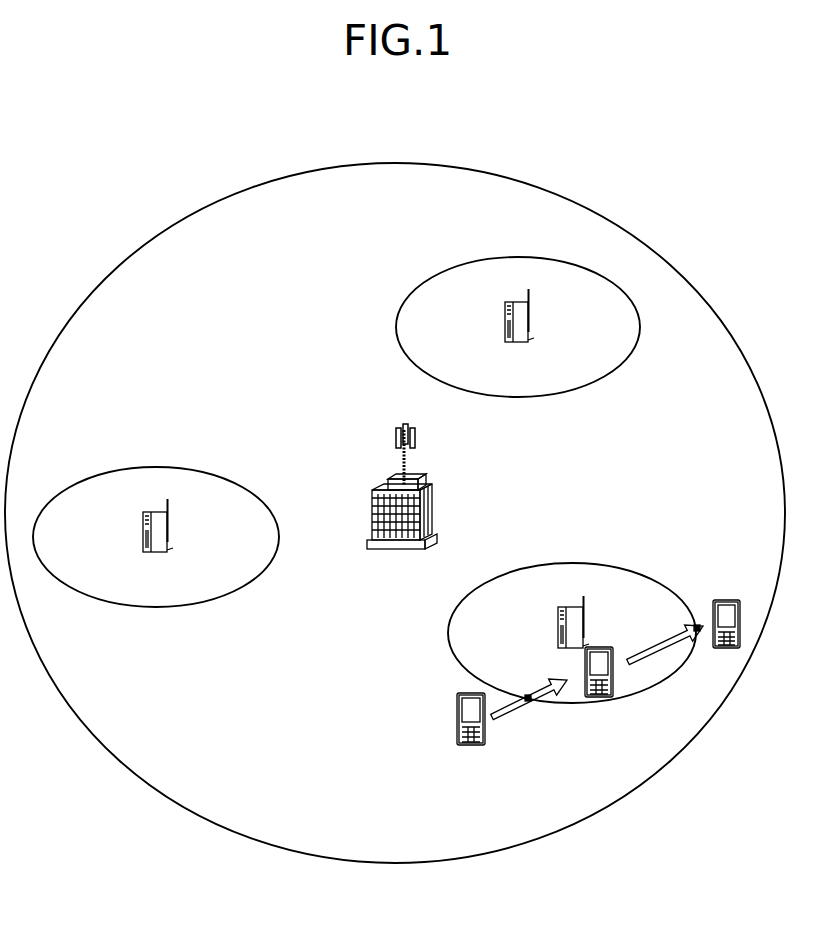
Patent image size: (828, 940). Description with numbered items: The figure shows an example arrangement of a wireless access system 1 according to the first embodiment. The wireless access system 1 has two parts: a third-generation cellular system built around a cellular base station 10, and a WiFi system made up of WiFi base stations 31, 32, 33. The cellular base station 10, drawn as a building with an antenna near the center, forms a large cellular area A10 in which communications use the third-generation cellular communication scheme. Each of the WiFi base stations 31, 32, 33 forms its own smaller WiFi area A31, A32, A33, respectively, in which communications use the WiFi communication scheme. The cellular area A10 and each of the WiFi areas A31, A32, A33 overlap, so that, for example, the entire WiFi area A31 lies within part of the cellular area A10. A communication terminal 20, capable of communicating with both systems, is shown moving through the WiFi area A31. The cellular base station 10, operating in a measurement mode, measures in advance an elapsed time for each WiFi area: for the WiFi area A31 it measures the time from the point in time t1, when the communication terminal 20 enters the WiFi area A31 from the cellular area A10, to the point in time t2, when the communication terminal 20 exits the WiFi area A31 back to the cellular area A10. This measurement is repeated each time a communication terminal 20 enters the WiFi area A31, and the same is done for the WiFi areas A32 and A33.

The wireless access system 1 is at (575, 142).
The 3G area A10 is at (636, 239).
The 3G base station 10 is at (437, 515).
The communication terminal 20 is at (467, 747).
The WiFi base station 31 is at (571, 606).
The WiFi base station 32 is at (521, 301).
The WiFi base station 33 is at (156, 511).
The WiFi area A31 is at (610, 564).
The WiFi area A32 is at (575, 393).
The WiFi area A33 is at (200, 605).
The point in time t1 is at (529, 701).
The point in time t2 is at (698, 632).